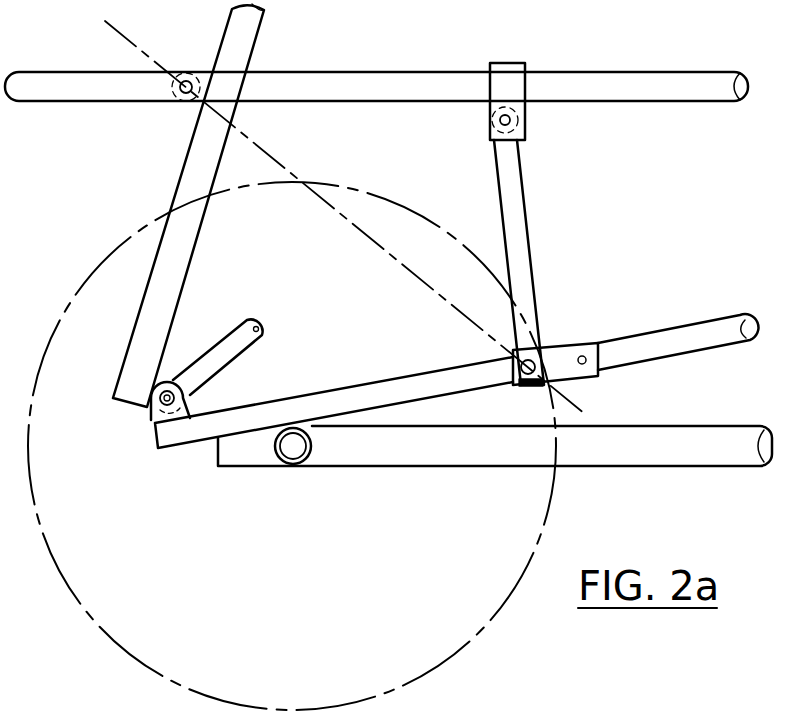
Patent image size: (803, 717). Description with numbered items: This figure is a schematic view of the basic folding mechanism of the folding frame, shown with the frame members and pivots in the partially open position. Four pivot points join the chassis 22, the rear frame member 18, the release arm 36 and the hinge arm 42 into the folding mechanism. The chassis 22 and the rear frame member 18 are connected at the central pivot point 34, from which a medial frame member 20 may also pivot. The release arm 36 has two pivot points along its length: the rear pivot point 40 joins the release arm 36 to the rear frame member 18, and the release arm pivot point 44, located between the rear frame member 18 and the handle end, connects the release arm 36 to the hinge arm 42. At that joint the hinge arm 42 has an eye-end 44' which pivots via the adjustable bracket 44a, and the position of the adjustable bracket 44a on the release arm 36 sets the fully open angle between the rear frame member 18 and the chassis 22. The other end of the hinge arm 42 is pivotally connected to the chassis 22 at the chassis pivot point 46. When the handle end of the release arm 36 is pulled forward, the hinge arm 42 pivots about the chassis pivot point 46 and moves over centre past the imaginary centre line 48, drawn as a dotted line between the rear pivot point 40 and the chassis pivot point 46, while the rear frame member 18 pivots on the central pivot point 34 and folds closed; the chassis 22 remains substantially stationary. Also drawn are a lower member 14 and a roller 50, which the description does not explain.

The base frame rail 14 is at (710, 446).
The rear frame member 18 is at (185, 172).
The medial frame member 20 is at (231, 346).
The chassis 22 is at (665, 340).
The central pivot point 34 is at (157, 403).
The release arm 36 is at (652, 92).
The rear pivot point 40 is at (186, 80).
The hinge arm 42 is at (517, 232).
The release arm pivot point 44 is at (472, 148).
The eye-end 44' is at (554, 126).
The adjustable bracket 44a is at (506, 78).
The chassis pivot point 46 is at (540, 365).
The imaginary centre line 48 is at (118, 34).
The roller 50 is at (293, 450).